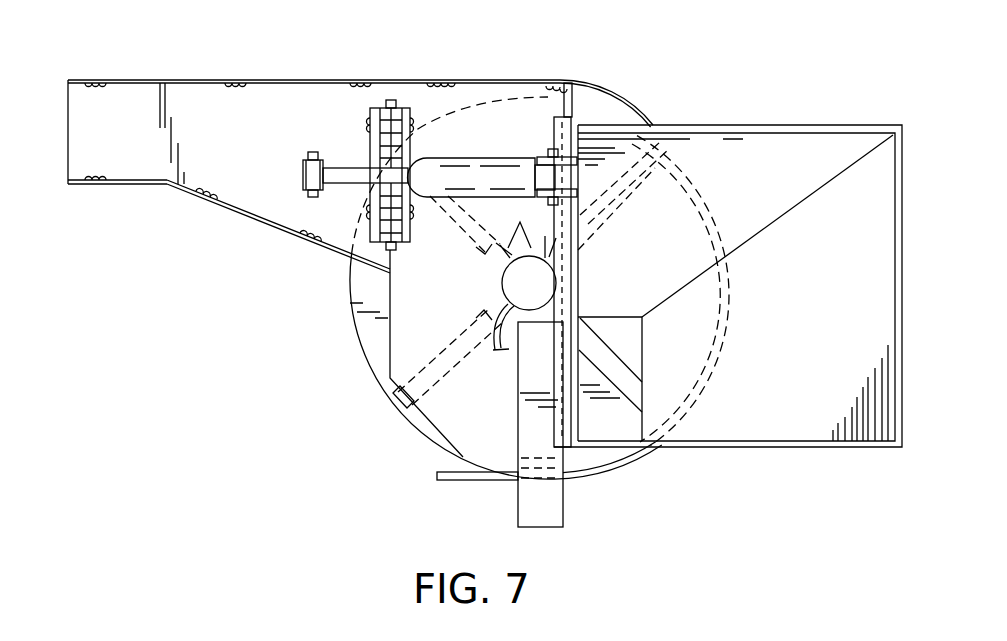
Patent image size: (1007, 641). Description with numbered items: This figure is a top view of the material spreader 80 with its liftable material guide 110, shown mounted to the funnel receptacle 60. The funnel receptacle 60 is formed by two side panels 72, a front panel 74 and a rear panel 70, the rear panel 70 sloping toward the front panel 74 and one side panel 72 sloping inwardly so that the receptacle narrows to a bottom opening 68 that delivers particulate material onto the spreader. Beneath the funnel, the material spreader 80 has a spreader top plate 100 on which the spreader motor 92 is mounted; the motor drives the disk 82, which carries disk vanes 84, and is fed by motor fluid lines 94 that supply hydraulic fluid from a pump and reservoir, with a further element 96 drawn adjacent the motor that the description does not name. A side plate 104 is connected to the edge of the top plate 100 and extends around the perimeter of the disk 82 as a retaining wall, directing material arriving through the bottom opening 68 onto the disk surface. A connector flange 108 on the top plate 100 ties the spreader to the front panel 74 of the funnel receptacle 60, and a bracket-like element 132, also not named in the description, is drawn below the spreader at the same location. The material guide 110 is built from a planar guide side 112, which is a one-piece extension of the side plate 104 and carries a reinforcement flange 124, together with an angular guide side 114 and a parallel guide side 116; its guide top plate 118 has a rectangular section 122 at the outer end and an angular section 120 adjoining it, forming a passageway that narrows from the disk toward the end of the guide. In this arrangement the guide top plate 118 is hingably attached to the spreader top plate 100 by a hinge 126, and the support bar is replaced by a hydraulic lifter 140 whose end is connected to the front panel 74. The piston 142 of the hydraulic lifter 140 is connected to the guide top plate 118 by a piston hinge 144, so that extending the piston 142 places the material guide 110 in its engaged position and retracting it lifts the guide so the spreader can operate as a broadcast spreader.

The funnel receptacle 60 is at (809, 117).
The bottom opening 68 is at (620, 325).
The rear panel 70 is at (815, 418).
The side panels 72 is at (758, 148).
The front panel 74 is at (580, 145).
The material spreader 80 is at (348, 402).
The disk 82 is at (363, 348).
The disk vanes 84 is at (617, 370).
The spreader motor 92 is at (503, 280).
The motor fluid lines 94 is at (526, 226).
The guide arm 96 is at (500, 332).
The spreader top plate 100 is at (518, 116).
The side plate 104 is at (477, 480).
The connector flange 108 is at (557, 422).
The material guide 110 is at (157, 50).
The planar guide side 112 is at (86, 80).
The angular guide side 114 is at (255, 222).
The parallel guide side 116 is at (110, 184).
The guide top plate 118 is at (202, 100).
The angular section 120 is at (233, 185).
The rectangular section 122 is at (131, 108).
The reinforcement flange 124 is at (418, 84).
The hinge 126 is at (397, 114).
The mounting bracket 132 is at (557, 510).
The hydraulic lifter 140 is at (465, 150).
The piston 142 is at (355, 174).
The piston hinge 144 is at (304, 152).